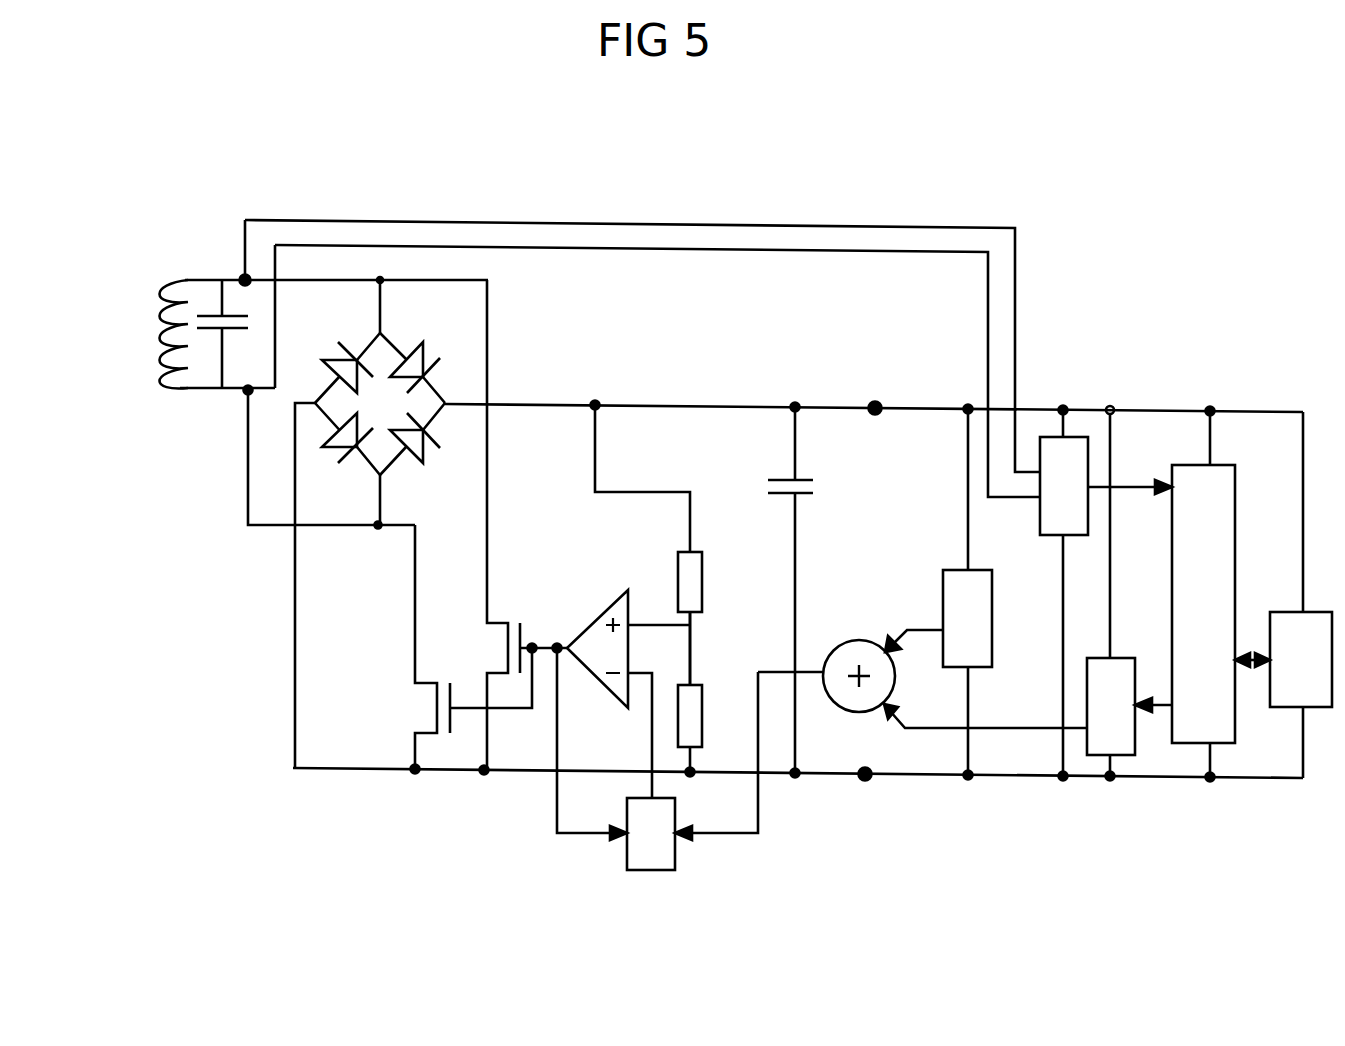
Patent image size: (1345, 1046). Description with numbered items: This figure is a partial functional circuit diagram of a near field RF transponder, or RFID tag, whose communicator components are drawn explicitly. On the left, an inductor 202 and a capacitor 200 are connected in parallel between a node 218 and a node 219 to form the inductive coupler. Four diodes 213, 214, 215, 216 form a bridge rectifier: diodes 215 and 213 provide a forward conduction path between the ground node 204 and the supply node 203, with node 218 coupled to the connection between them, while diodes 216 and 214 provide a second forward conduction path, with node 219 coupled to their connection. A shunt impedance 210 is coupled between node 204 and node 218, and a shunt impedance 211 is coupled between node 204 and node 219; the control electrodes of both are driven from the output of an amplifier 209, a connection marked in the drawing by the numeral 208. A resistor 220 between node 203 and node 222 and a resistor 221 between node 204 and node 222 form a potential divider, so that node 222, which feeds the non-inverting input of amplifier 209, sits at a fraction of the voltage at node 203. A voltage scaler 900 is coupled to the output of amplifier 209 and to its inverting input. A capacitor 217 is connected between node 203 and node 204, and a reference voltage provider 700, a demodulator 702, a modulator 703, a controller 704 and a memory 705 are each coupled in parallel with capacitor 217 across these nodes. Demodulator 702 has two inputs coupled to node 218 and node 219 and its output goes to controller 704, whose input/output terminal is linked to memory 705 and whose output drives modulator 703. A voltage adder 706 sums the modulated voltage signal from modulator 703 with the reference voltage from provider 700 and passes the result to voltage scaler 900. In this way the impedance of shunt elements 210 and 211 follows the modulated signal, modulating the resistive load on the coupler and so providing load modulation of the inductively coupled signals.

The capacitor 200 is at (213, 335).
The inductor 202 is at (167, 387).
The node 203 is at (879, 391).
The node 204 is at (874, 796).
The comparator output node 208 is at (540, 652).
The amplifier 209 is at (592, 637).
The shunt impedance 210 is at (508, 620).
The shunt impedance 211 is at (423, 723).
The diode 213 is at (430, 353).
The diode 214 is at (432, 457).
The diode 215 is at (332, 353).
The diode 216 is at (332, 457).
The capacitor 217 is at (780, 477).
The node 218 is at (250, 294).
The node 219 is at (252, 378).
The resistor 220 is at (676, 565).
The resistor 221 is at (676, 733).
The node 222 is at (692, 635).
The reference voltage provider 700 is at (960, 593).
The demodulator 702 is at (1088, 462).
The modulator 703 is at (1100, 738).
The controller 704 is at (1203, 594).
The memory 705 is at (1283, 659).
The voltage adder 706 is at (865, 642).
The voltage scaler 900 is at (650, 834).